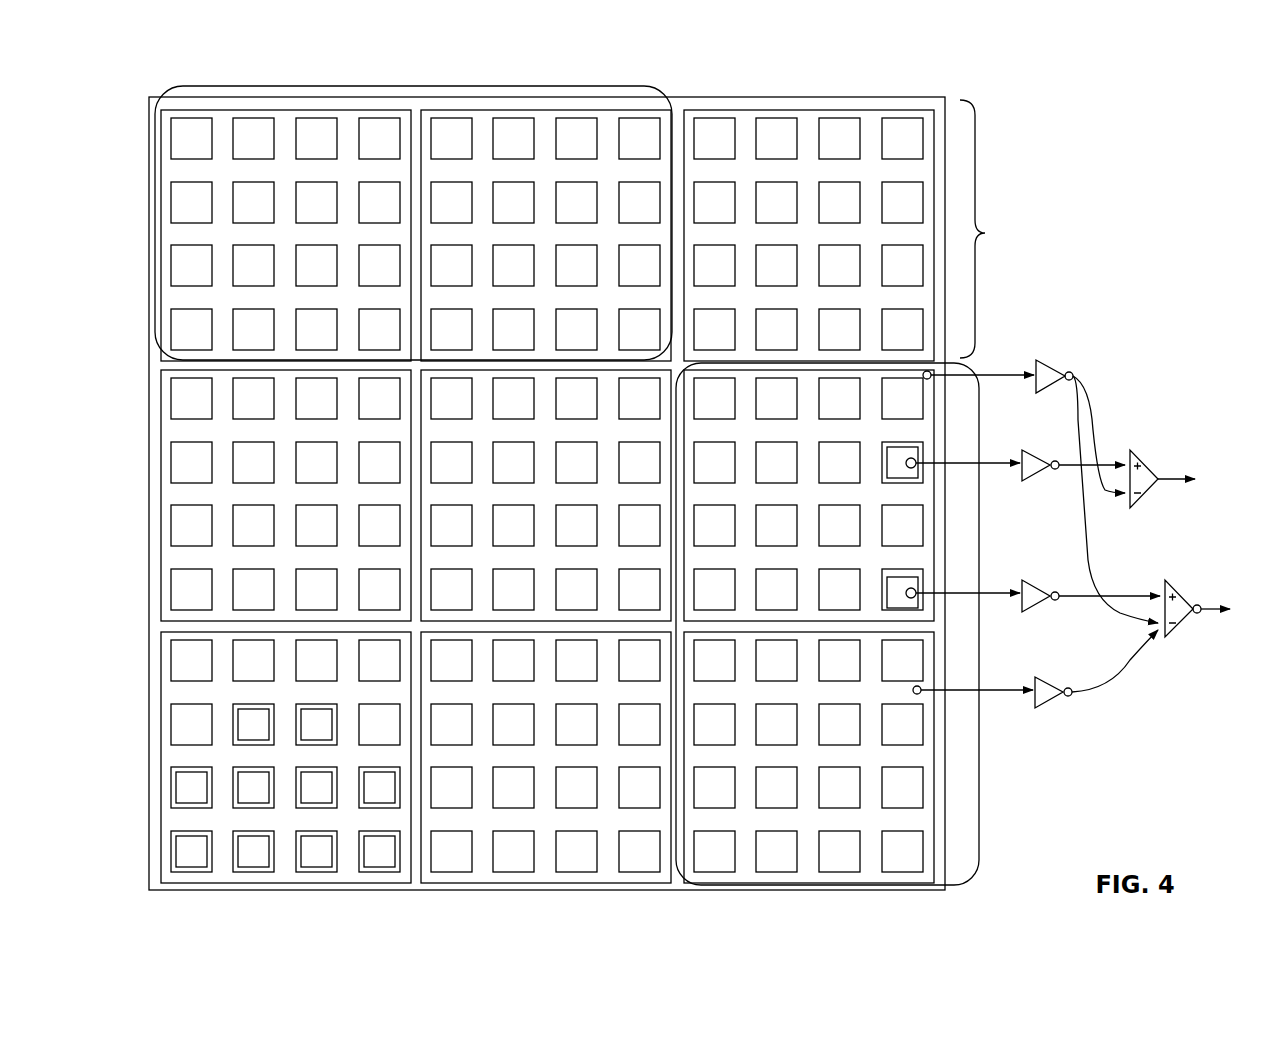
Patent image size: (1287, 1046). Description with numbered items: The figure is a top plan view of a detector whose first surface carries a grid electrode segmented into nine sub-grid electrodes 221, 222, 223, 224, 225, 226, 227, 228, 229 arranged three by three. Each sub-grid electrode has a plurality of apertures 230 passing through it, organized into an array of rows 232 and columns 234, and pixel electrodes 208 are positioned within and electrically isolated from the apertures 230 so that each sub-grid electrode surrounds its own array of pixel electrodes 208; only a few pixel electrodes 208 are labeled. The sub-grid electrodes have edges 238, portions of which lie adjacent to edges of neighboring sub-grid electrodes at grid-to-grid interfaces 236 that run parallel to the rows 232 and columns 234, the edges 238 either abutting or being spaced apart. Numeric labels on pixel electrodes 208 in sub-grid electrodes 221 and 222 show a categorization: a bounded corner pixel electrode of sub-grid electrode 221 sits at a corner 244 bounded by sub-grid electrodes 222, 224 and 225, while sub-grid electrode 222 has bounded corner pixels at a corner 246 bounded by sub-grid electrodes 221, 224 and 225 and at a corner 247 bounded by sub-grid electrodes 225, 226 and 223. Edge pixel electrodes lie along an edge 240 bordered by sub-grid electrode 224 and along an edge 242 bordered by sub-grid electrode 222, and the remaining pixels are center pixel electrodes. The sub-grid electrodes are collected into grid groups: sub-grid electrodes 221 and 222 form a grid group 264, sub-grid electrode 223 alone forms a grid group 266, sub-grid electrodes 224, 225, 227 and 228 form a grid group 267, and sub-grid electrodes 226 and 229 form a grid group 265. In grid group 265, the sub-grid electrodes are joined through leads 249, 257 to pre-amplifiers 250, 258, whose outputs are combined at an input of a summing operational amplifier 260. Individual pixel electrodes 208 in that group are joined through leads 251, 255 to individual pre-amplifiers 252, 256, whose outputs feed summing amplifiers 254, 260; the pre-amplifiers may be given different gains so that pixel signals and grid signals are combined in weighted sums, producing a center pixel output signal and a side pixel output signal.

The pixel electrodes 208 is at (176, 157).
The sub-grid electrode 221 is at (240, 122).
The sub-grid electrode 222 is at (480, 122).
The sub-grid electrode 223 is at (742, 122).
The sub-grid electrode 224 is at (172, 430).
The sub-grid electrode 225 is at (596, 507).
The sub-grid electrode 226 is at (912, 493).
The sub-grid electrode 227 is at (345, 873).
The sub-grid electrode 228 is at (610, 873).
The sub-grid electrode 229 is at (807, 868).
The apertures 230 is at (233, 781).
The rows 232 is at (162, 862).
The columns 234 is at (186, 879).
The grid-to-grid interfaces 236 is at (221, 642).
The edges 238 is at (680, 125).
The edge 240 is at (168, 365).
The edge 242 is at (408, 128).
The corner 244 is at (380, 364).
The corner 246 is at (427, 358).
The corner 247 is at (663, 364).
The lead 249 is at (1021, 369).
The pre-amplifier 250 is at (1052, 361).
The lead 251 is at (993, 465).
The pre-amplifier 252 is at (1040, 480).
The summing amplifier 254 is at (1150, 465).
The lead 255 is at (990, 593).
The pre-amplifier 256 is at (1047, 606).
The lead 257 is at (997, 695).
The pre-amplifier 258 is at (1057, 701).
The summing operational amplifier 260 is at (1186, 586).
The grid group 264 is at (418, 86).
The grid group 265 is at (980, 610).
The grid group 266 is at (998, 229).
The grid group 267 is at (405, 905).